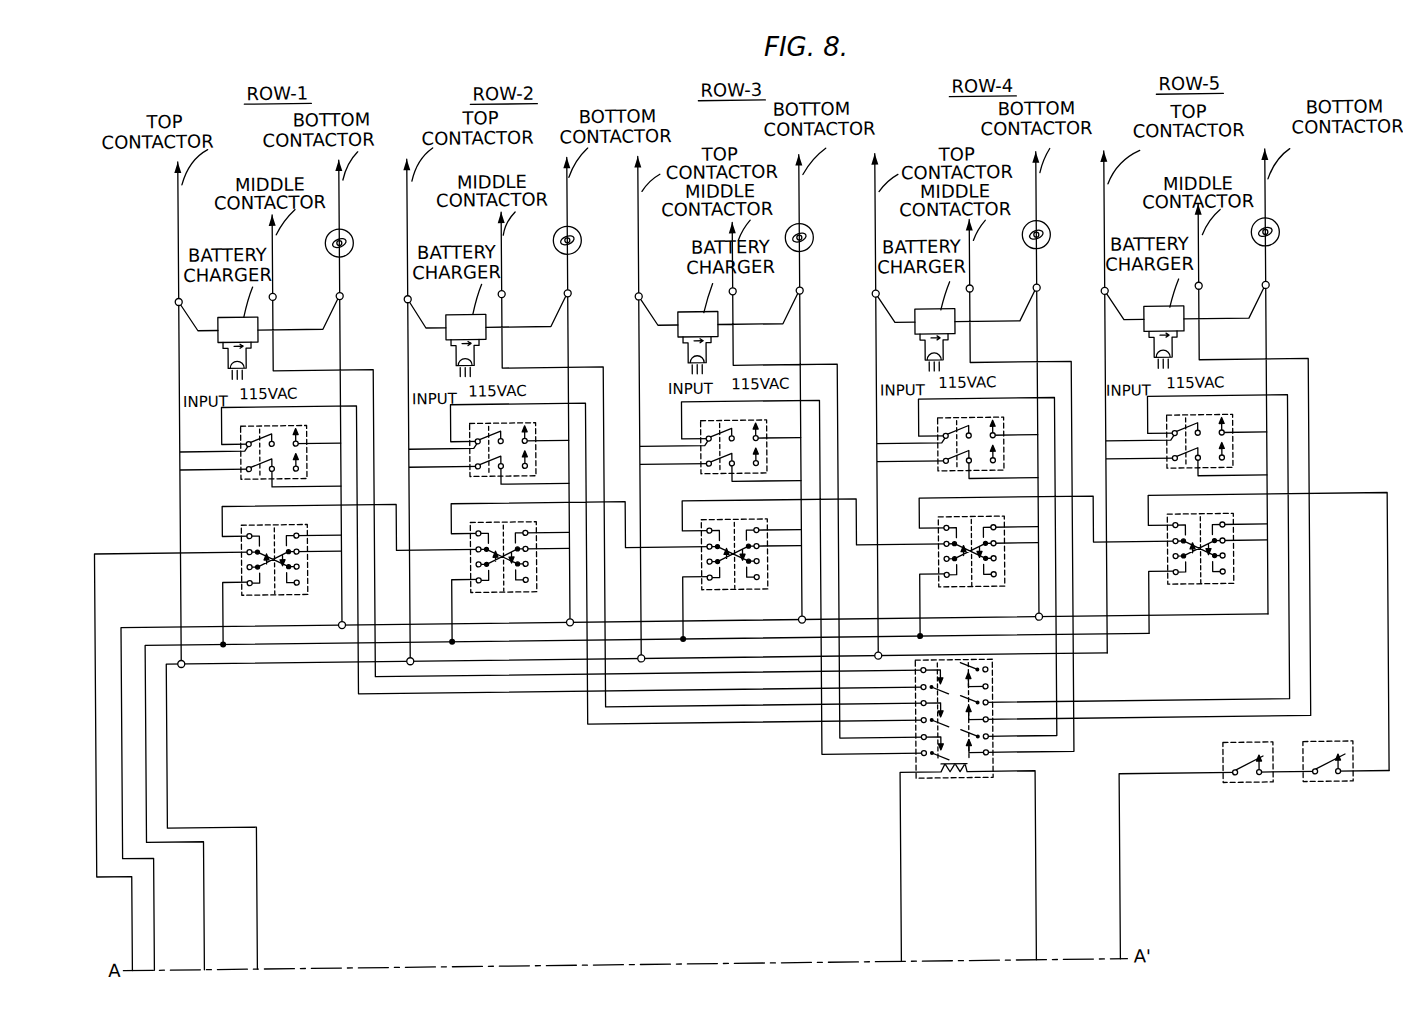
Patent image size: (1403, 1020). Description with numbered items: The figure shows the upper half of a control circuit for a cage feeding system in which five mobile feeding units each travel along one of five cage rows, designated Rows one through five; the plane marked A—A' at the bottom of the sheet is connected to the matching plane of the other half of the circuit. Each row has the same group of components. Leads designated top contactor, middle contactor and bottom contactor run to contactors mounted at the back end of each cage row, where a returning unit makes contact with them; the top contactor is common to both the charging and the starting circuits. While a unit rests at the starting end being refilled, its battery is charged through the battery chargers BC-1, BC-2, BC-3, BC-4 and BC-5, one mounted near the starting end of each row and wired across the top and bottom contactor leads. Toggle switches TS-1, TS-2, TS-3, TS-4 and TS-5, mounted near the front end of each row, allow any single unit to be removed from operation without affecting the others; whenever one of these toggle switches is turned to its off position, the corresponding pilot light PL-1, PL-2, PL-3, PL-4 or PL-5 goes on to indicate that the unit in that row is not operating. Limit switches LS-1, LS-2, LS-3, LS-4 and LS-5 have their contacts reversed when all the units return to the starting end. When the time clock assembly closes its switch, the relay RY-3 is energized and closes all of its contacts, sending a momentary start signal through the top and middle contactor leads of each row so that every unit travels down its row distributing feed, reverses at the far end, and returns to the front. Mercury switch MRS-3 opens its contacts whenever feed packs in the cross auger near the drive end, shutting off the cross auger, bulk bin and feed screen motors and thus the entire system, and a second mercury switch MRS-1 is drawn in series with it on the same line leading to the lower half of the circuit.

The toggle switch TS-1 is at (273, 441).
The toggle switch TS-2 is at (502, 439).
The toggle switch TS-3 is at (733, 436).
The toggle switch TS-4 is at (970, 433).
The toggle switch TS-5 is at (1199, 430).
The limit switch LS-1 is at (274, 550).
The limit switch LS-2 is at (503, 548).
The limit switch LS-3 is at (734, 545).
The limit switch LS-4 is at (971, 542).
The limit switch LS-5 is at (1200, 539).
The battery charger BC-1 is at (238, 348).
The battery charger BC-2 is at (466, 345).
The battery charger BC-3 is at (698, 343).
The battery charger BC-4 is at (935, 340).
The battery charger BC-5 is at (1164, 337).
The pilot light PL-1 is at (359, 244).
The pilot light PL-2 is at (584, 242).
The pilot light PL-3 is at (816, 245).
The pilot light PL-4 is at (1053, 246).
The pilot light PL-5 is at (1282, 251).
The relay RY-3 is at (967, 810).
The mercury switch MRS-3 is at (1248, 750).
The mercury switch MRS-1 is at (1328, 749).